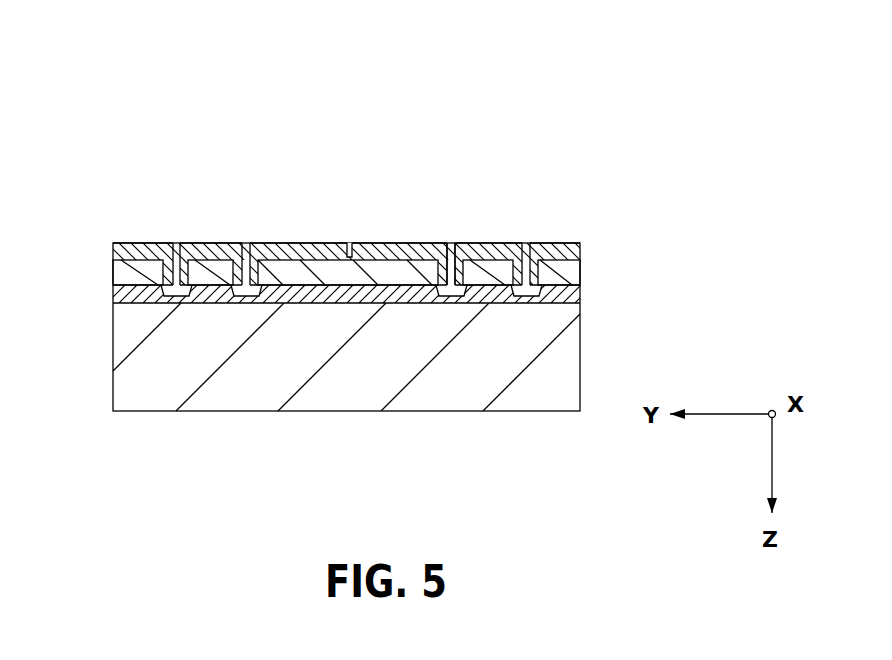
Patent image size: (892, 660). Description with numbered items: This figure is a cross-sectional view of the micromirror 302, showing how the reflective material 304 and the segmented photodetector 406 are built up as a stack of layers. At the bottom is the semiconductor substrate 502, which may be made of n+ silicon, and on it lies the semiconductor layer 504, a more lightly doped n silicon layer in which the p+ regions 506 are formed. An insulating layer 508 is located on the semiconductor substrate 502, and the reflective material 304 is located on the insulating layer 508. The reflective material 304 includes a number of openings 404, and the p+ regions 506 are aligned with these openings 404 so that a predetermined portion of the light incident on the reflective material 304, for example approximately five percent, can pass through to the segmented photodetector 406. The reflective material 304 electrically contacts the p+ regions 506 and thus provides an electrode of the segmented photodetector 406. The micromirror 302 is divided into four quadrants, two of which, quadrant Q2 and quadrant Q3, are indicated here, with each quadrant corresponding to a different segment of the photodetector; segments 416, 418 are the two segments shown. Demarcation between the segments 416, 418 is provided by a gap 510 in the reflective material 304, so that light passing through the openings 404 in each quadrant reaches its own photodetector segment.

The micromirror 302 is at (130, 242).
The reflective material 304 is at (300, 242).
The openings 404 is at (452, 243).
The segmented photodetector 406 is at (623, 297).
The segment 416 is at (233, 165).
The segment 418 is at (472, 175).
The semiconductor substrate 502 is at (160, 401).
The semiconductor layer 504 is at (558, 304).
The p+ regions 506 is at (450, 290).
The insulating layer 508 is at (580, 276).
The gap 510 is at (347, 243).
The quadrant Q2 is at (193, 100).
The quadrant Q3 is at (507, 110).